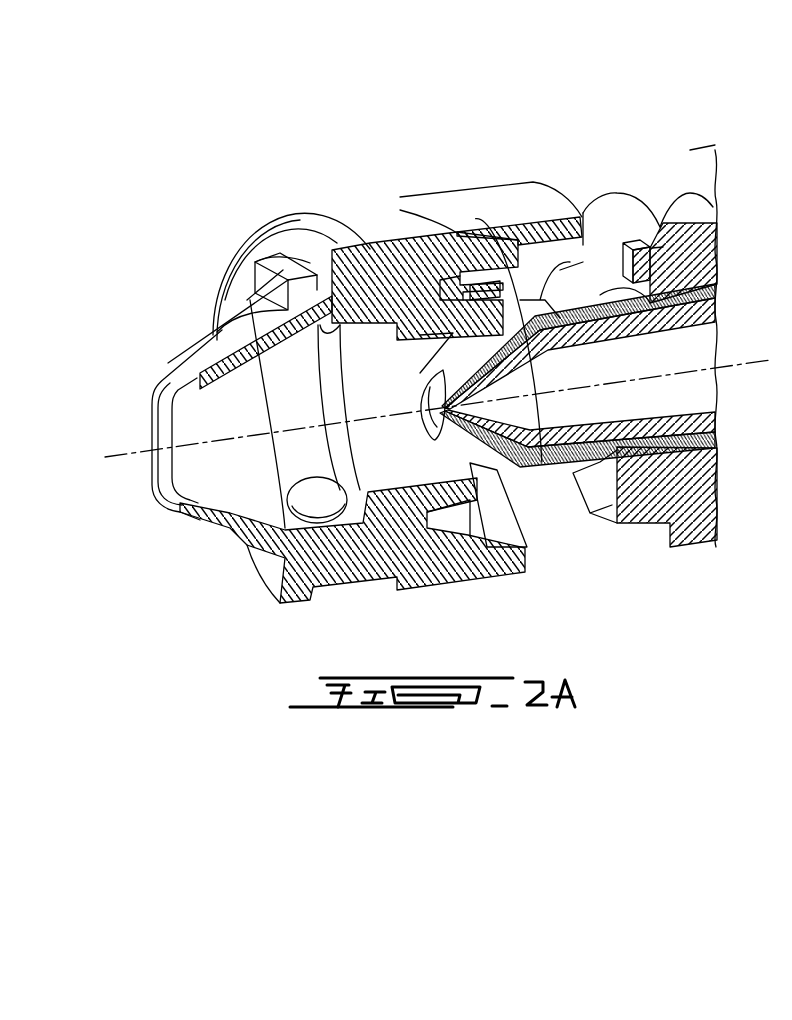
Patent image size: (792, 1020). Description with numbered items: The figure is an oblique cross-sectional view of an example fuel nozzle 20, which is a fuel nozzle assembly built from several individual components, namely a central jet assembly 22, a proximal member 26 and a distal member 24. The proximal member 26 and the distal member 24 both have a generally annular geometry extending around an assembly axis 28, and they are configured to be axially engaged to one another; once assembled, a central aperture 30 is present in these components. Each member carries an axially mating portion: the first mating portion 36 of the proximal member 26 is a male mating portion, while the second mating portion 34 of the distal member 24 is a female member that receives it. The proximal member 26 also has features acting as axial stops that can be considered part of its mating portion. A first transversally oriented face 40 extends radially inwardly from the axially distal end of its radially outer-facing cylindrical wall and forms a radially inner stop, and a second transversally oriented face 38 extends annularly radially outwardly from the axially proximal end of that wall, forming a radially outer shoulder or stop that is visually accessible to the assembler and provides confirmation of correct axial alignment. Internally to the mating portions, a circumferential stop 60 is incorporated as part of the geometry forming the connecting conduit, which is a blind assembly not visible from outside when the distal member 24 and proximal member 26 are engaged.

The fuel nozzle 20 is at (238, 185).
The central jet assembly 22 is at (501, 262).
The distal member 24 is at (330, 222).
The proximal member 26 is at (630, 188).
The assembly axis 28 is at (128, 453).
The central aperture 30 is at (237, 477).
The second mating portion 34 is at (547, 228).
The first mating portion 36 is at (667, 193).
The second transversally oriented face 38 is at (696, 175).
The first transversally oriented face 40 is at (614, 214).
The circumferential stop 60 is at (480, 290).